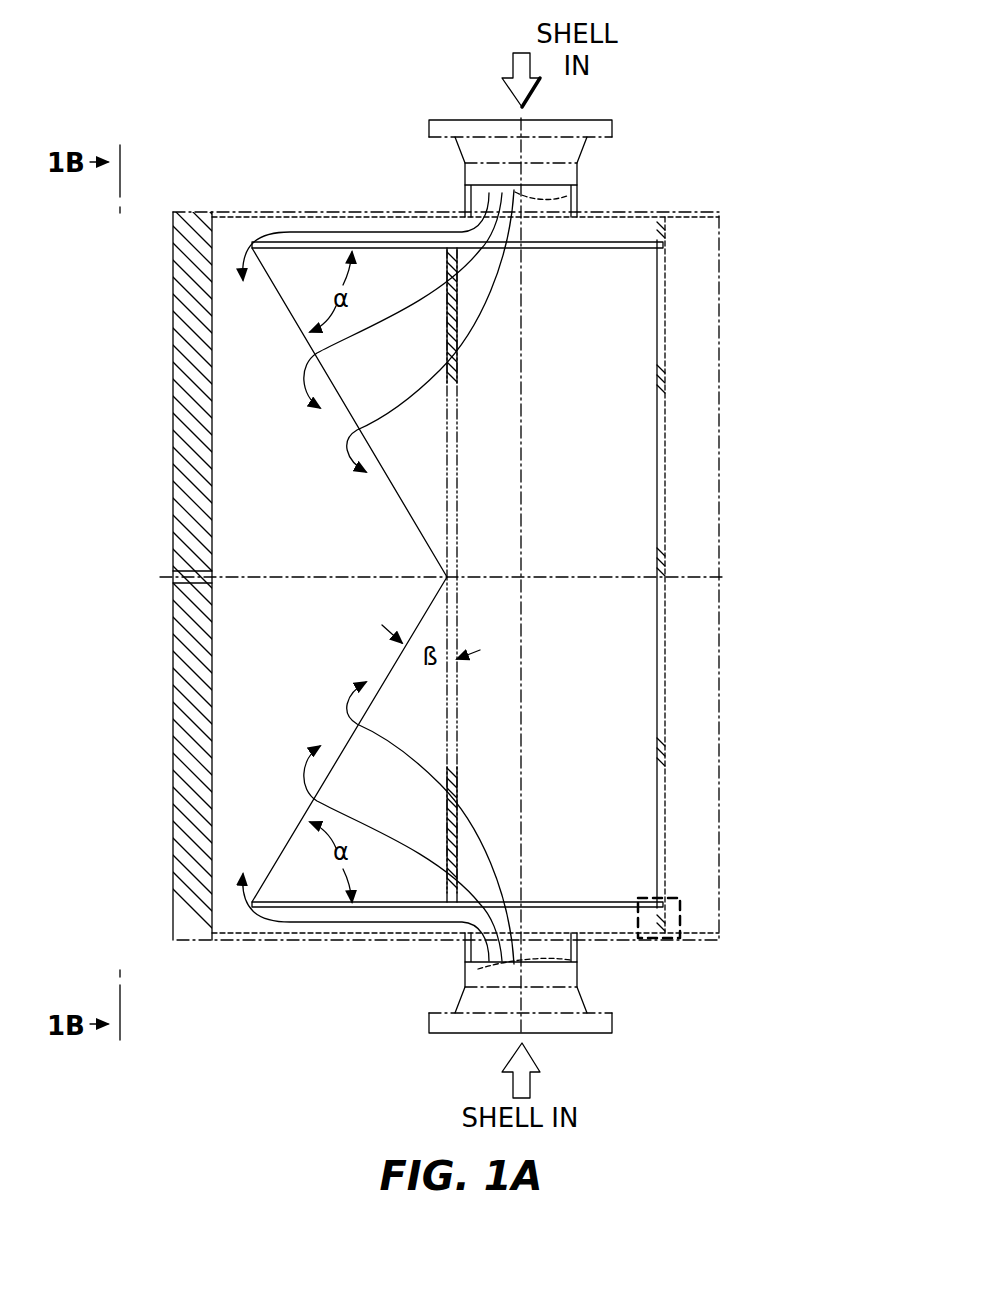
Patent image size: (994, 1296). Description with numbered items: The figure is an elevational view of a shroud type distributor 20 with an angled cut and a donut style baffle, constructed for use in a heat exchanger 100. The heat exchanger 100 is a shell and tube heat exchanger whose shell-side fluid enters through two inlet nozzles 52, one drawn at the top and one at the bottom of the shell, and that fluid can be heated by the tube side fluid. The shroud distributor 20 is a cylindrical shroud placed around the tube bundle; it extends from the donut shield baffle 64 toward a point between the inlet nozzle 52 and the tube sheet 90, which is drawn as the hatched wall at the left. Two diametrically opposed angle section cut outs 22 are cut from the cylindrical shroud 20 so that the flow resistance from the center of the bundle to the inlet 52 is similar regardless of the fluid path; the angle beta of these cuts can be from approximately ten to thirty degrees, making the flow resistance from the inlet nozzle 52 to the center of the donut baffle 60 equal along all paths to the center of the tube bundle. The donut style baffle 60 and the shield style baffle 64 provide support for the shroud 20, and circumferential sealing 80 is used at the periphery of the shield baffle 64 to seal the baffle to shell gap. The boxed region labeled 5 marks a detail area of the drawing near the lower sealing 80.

The heat exchanger 100 is at (390, 52).
The tube sheet 90 is at (173, 377).
The shield baffle 64 is at (668, 440).
The circumferential sealing 80 is at (663, 238).
The inlet nozzle 52 is at (612, 127).
The shroud distributor 20 is at (294, 243).
The angle section cut outs 22 is at (390, 480).
The donut baffle 60 is at (455, 789).
The detail region 5 is at (684, 921).